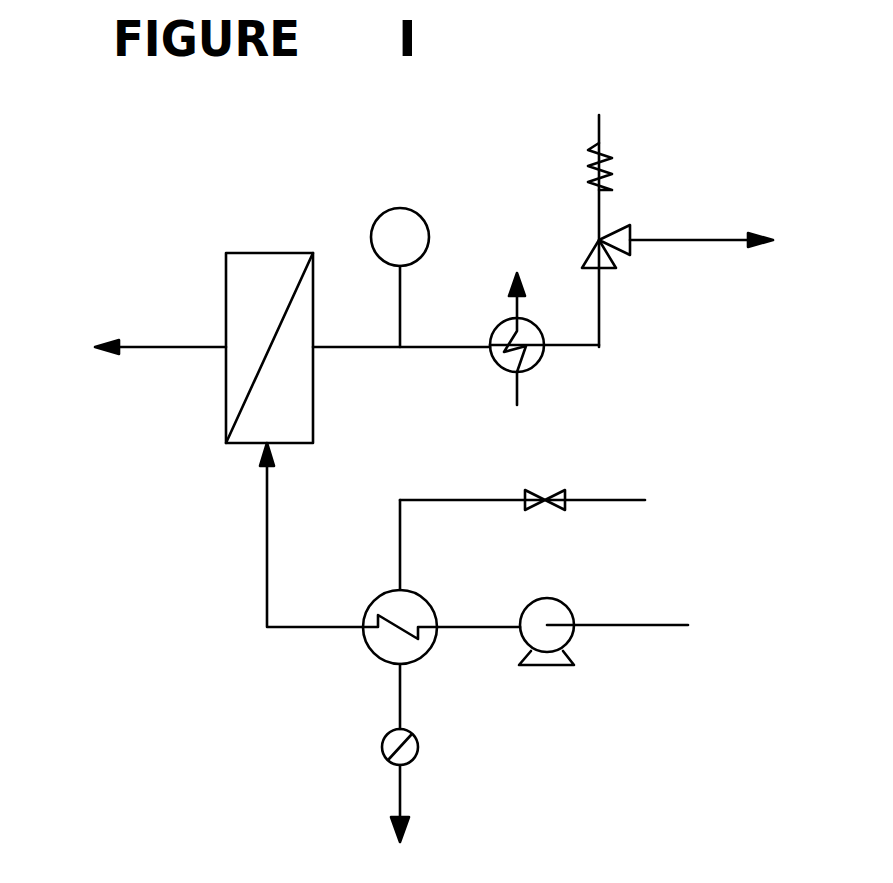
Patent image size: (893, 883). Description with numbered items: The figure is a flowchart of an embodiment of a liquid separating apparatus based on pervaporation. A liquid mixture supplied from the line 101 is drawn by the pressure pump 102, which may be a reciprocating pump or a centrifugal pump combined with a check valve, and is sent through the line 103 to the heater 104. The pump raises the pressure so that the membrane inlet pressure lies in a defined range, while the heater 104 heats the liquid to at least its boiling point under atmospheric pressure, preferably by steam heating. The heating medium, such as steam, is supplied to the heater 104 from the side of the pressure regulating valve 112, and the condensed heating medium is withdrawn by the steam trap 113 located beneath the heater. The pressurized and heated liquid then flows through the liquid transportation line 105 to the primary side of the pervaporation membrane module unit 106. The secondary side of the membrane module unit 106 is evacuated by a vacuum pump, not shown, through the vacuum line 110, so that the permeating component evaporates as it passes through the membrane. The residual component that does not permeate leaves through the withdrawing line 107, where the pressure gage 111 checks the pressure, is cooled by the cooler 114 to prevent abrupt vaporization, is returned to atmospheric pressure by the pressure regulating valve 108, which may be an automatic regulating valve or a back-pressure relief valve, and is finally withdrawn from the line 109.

The liquid transporting line 101 is at (648, 627).
The pressure pump 102 is at (565, 604).
The liquid transporting line 103 is at (460, 628).
The heater 104 is at (374, 656).
The liquid transportation line 105 is at (265, 557).
The pervaporation membrane module unit 106 is at (313, 404).
The withdrawing line 107 is at (440, 348).
The pressure regulating valve 108 is at (610, 270).
The liquid transporting line 109 is at (720, 242).
The vacuum line 110 is at (155, 349).
The pressure gage 111 is at (424, 216).
The pressure regulating valve 112 is at (551, 497).
The steam trap 113 is at (414, 758).
The cooler 114 is at (534, 366).